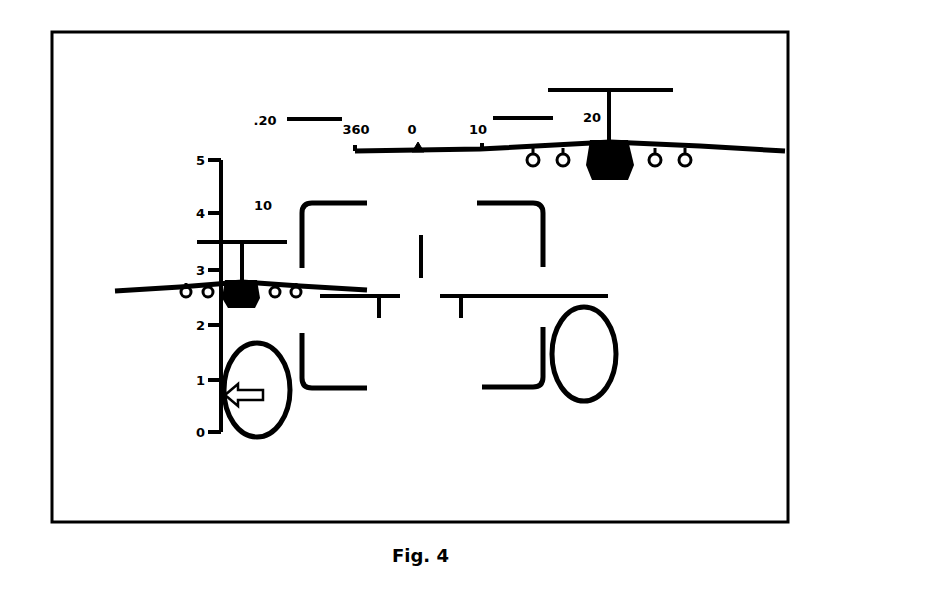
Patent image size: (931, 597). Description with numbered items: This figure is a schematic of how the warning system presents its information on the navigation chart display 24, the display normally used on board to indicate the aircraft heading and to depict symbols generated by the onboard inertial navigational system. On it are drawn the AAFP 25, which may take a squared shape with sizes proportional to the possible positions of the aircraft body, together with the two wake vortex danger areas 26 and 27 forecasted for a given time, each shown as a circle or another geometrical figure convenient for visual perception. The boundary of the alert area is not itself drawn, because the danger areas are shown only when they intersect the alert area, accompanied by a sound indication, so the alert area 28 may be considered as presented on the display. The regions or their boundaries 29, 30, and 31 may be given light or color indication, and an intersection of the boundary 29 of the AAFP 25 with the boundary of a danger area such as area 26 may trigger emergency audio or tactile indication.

The navigation chart display 24 is at (138, 515).
The AAFP 25 is at (528, 255).
The wake vortex danger area 26 is at (253, 427).
The wake vortex danger area 27 is at (597, 342).
The alert area 28 is at (615, 38).
The boundary of the AAFP 29 is at (365, 390).
The boundary of the wake vortex danger area 30 is at (288, 418).
The boundary of the wake vortex danger area 31 is at (608, 388).